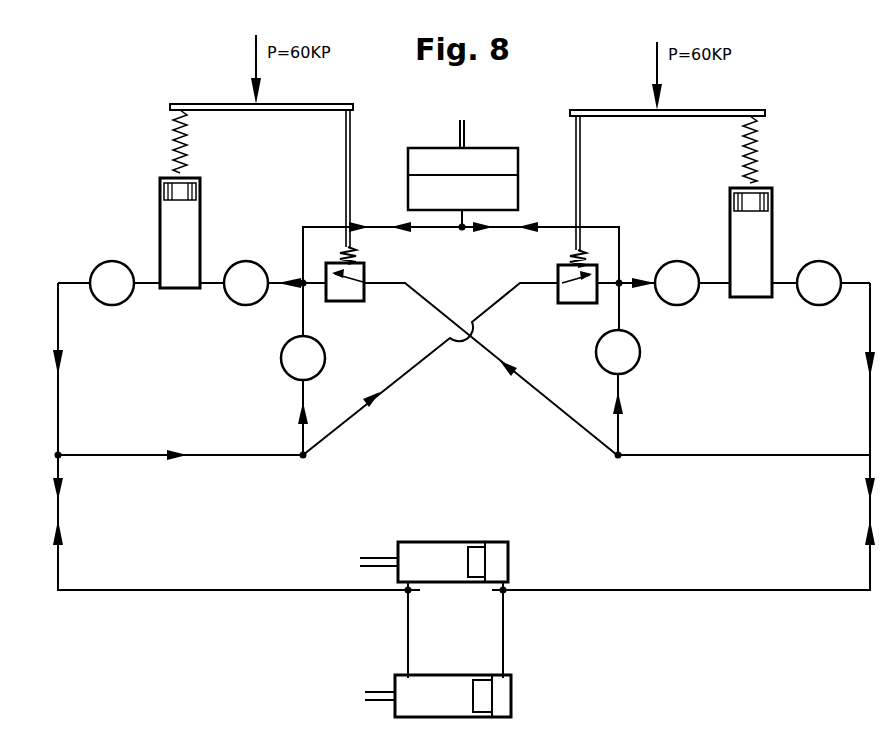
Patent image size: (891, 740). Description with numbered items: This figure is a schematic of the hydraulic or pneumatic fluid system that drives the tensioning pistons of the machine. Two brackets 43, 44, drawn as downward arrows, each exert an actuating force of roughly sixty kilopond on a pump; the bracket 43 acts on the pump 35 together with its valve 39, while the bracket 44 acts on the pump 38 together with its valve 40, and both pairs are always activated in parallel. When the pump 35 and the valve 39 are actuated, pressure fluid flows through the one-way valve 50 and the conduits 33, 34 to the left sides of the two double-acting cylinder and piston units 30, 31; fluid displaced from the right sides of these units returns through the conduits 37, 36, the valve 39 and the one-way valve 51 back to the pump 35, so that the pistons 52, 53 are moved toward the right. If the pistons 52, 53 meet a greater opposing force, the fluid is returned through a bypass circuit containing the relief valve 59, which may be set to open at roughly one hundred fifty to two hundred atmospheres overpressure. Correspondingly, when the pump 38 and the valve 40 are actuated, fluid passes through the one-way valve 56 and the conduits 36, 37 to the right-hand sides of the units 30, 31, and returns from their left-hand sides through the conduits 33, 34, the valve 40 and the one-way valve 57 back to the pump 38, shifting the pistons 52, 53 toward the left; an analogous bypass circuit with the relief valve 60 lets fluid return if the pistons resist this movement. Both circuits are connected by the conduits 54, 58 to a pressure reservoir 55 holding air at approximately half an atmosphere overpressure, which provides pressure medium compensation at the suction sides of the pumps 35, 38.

The double-acting cylinder and piston unit 30 is at (436, 555).
The double-acting cylinder and piston unit 31 is at (398, 687).
The conduit 33 is at (406, 590).
The conduit 34 is at (405, 638).
The pump 35 is at (160, 215).
The conduit 36 is at (505, 590).
The conduit 37 is at (505, 622).
The pump 38 is at (772, 233).
The valve 39 is at (364, 270).
The valve 40 is at (598, 270).
The bracket 43 is at (253, 48).
The bracket 44 is at (655, 50).
The one-way valve 50 is at (98, 268).
The one-way valve 51 is at (244, 296).
The piston 52 is at (476, 558).
The piston 53 is at (492, 697).
The conduit 54 is at (306, 227).
The pressure reservoir 55 is at (518, 188).
The one-way valve 56 is at (836, 272).
The one-way valve 57 is at (688, 268).
The conduit 58 is at (604, 228).
The relief valve 59 is at (290, 364).
The relief valve 60 is at (634, 364).